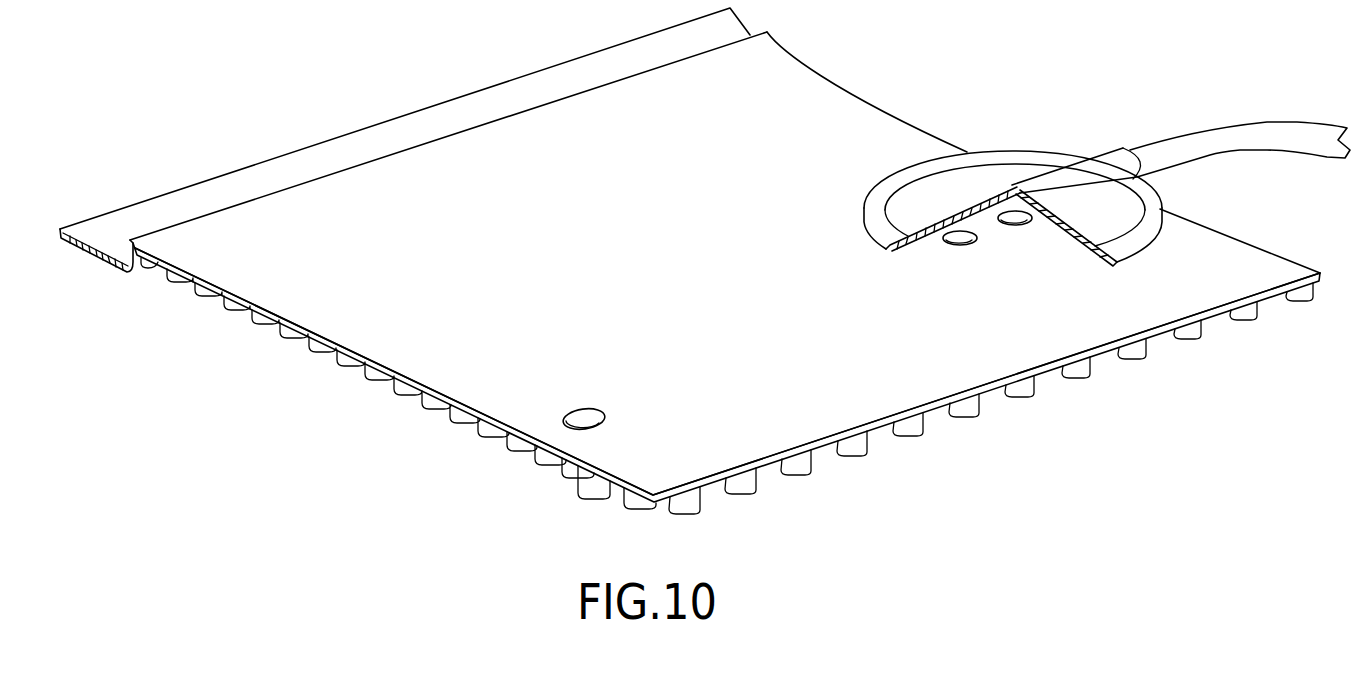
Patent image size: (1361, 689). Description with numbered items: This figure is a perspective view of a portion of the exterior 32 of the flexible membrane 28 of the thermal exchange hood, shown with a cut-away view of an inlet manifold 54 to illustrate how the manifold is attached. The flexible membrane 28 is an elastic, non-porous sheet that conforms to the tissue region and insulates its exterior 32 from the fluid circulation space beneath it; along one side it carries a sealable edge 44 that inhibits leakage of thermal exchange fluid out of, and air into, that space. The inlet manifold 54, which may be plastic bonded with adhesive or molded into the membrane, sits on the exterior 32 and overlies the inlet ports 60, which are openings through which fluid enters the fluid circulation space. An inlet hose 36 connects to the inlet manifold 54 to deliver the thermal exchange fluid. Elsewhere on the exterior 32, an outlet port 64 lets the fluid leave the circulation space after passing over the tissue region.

The flexible membrane 28 is at (823, 80).
The exterior 32 is at (630, 236).
The inlet hose 36 is at (1217, 127).
The sealable edge 44 is at (125, 273).
The inlet manifold 54 is at (993, 172).
The inlet port 60 is at (1012, 225).
The outlet port 64 is at (587, 407).